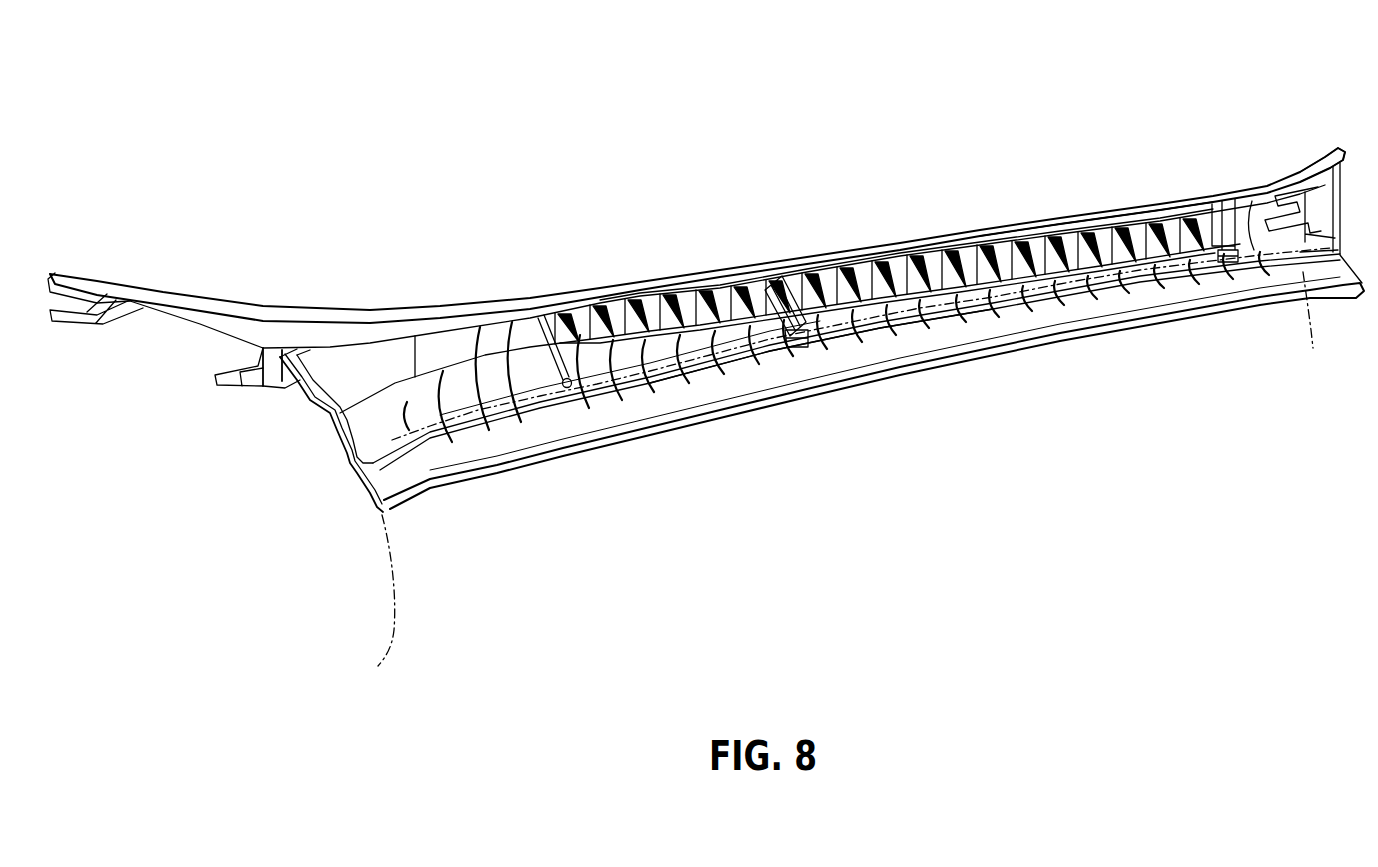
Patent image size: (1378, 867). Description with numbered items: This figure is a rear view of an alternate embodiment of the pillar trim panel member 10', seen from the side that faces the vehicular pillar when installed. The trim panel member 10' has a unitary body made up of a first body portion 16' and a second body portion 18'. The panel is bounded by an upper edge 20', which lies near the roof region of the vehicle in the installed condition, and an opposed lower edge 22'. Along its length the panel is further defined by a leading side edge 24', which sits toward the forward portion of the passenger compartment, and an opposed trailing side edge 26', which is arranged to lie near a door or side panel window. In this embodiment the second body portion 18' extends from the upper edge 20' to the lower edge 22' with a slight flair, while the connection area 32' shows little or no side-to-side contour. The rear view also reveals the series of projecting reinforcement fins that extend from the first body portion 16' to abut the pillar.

The trim panel member 10' is at (705, 258).
The first body portion 16' is at (804, 262).
The second body portion 18' is at (821, 375).
The upper edge 20' is at (1312, 133).
The lower edge 22' is at (295, 507).
The leading side edge 24' is at (1096, 188).
The trailing side edge 26' is at (874, 393).
The connection area 32' is at (1289, 321).